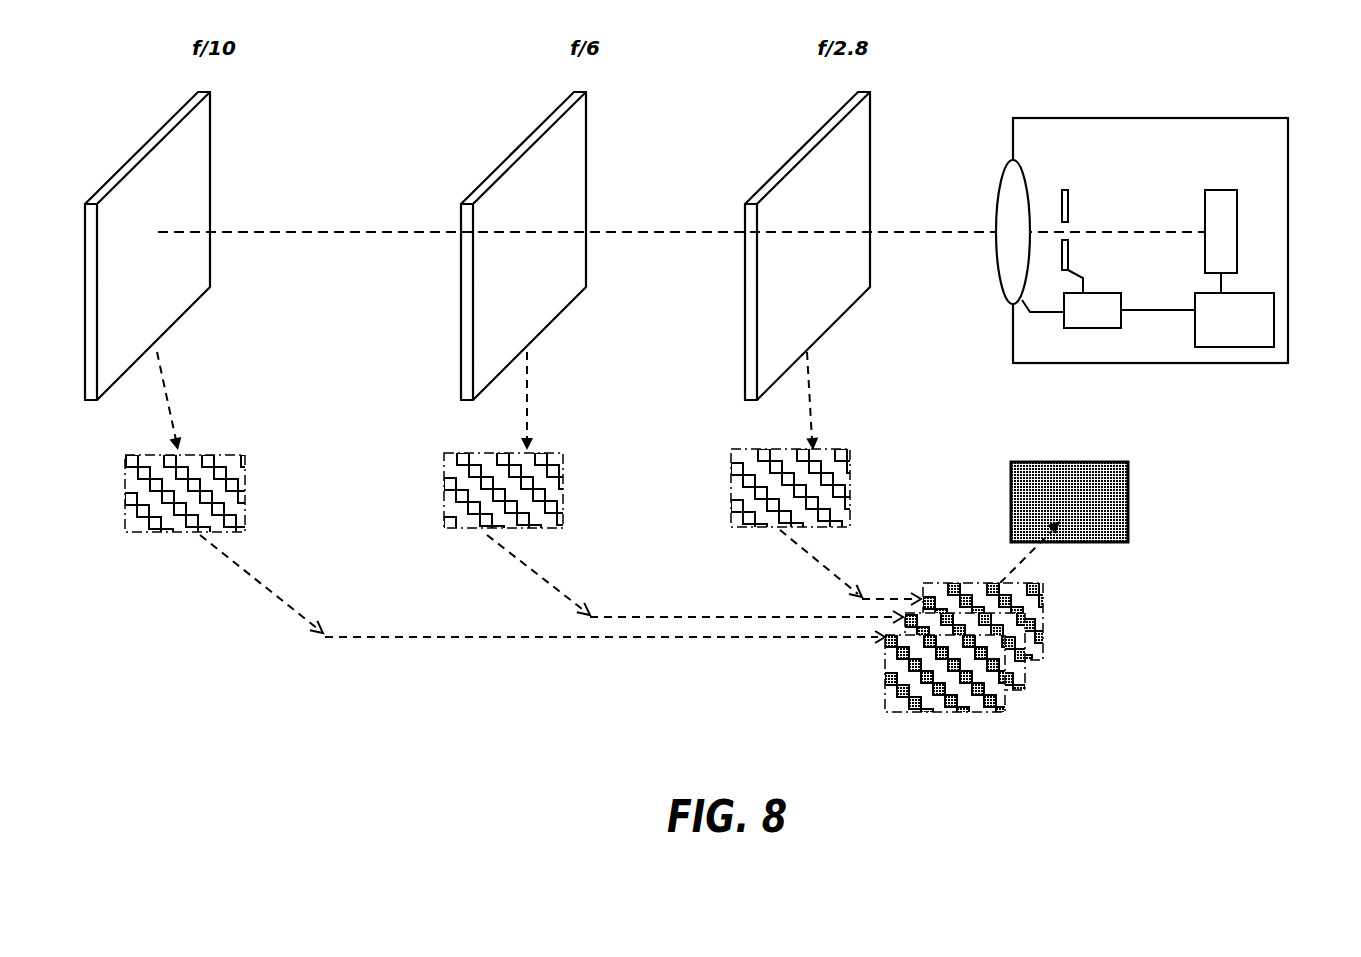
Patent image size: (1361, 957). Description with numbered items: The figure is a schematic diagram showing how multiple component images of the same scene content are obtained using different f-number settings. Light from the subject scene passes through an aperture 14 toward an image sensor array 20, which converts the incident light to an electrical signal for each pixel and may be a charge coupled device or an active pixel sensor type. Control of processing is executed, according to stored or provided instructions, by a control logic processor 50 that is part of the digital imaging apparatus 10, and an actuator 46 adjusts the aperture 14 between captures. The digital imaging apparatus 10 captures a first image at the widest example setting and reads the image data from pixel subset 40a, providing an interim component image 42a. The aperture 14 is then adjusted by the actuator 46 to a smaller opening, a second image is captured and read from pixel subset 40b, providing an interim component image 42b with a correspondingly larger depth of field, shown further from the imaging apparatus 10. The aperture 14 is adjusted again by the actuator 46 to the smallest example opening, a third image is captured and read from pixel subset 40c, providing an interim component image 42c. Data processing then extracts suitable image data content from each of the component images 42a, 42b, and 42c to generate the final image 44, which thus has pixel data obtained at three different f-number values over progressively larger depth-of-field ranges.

The digital imaging apparatus 10 is at (1258, 363).
The aperture 14 is at (1067, 190).
The image sensor array 20 is at (1237, 190).
The actuator 46 is at (1121, 318).
The control logic processor 50 is at (1274, 322).
The pixel subset 40a is at (852, 494).
The pixel subset 40b is at (565, 490).
The pixel subset 40c is at (207, 455).
The interim component image 42a is at (1043, 613).
The interim component image 42b is at (1022, 670).
The interim component image 42c is at (1005, 705).
The final image 44 is at (1128, 495).